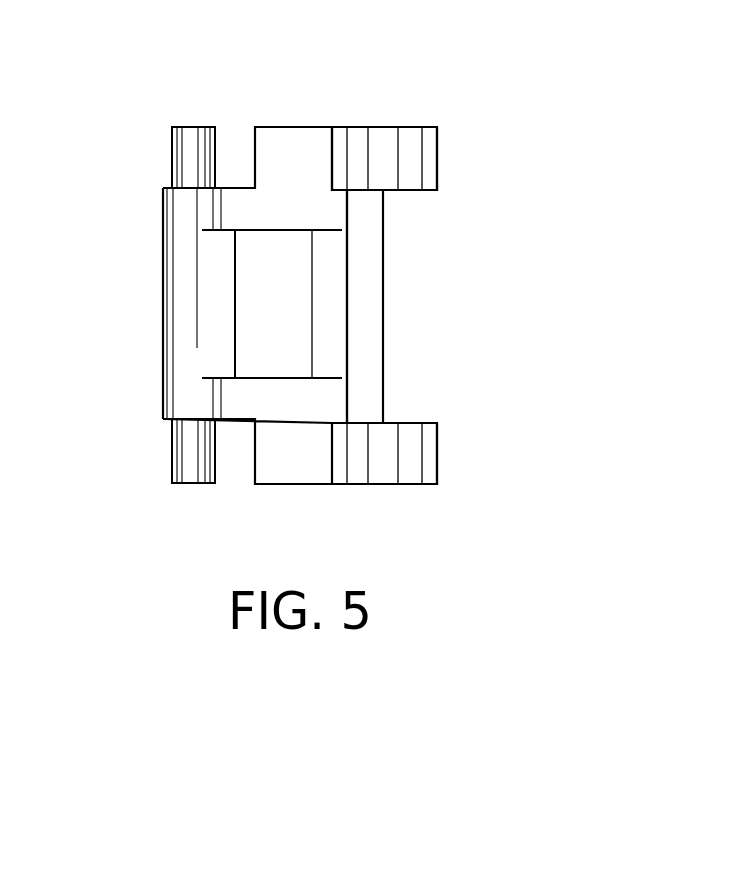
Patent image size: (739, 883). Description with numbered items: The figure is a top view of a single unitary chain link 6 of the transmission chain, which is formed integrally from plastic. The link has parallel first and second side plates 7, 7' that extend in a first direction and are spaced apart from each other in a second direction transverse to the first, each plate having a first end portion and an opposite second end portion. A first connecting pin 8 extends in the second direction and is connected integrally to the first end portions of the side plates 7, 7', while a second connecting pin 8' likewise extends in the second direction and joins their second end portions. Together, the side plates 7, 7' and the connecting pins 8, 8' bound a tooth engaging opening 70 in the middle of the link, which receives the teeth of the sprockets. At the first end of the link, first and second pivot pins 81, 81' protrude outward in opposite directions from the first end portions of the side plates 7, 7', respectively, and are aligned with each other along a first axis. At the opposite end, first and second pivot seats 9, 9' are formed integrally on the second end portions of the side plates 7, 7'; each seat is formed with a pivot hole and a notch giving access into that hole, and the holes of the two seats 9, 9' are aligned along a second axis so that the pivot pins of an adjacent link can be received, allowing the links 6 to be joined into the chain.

The unitary chain link 6 is at (307, 126).
The first side plate 7 is at (272, 148).
The second side plate 7' is at (272, 467).
The first connecting pin 8 is at (142, 303).
The second connecting pin 8' is at (407, 306).
The tooth engaging opening 70 is at (302, 342).
The first pivot pin 81 is at (197, 103).
The second pivot pin 81' is at (131, 451).
The first pivot seat 9 is at (385, 100).
The second pivot seat 9' is at (458, 453).